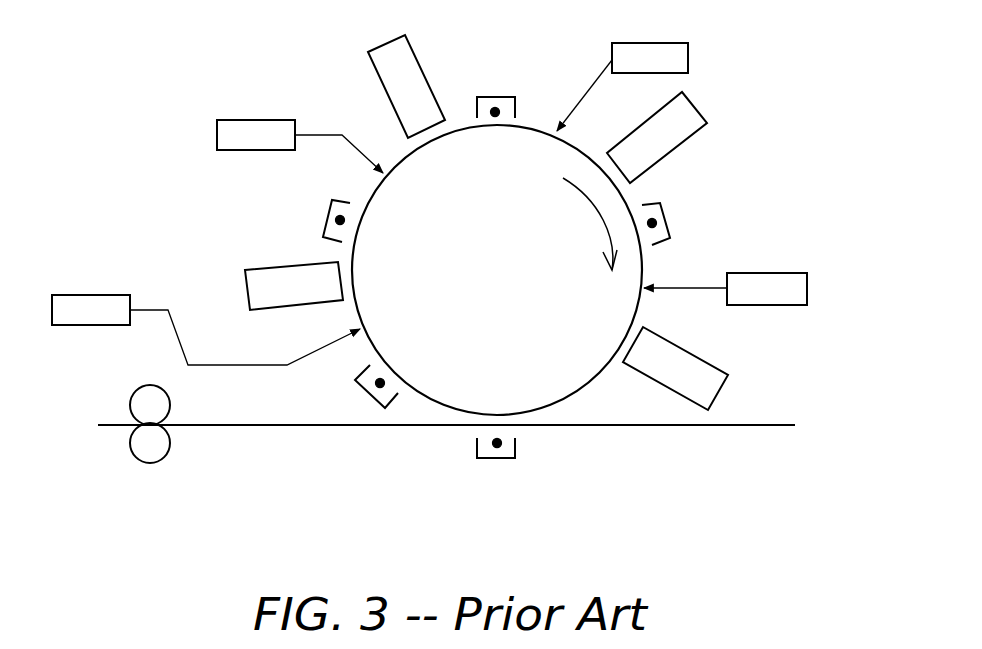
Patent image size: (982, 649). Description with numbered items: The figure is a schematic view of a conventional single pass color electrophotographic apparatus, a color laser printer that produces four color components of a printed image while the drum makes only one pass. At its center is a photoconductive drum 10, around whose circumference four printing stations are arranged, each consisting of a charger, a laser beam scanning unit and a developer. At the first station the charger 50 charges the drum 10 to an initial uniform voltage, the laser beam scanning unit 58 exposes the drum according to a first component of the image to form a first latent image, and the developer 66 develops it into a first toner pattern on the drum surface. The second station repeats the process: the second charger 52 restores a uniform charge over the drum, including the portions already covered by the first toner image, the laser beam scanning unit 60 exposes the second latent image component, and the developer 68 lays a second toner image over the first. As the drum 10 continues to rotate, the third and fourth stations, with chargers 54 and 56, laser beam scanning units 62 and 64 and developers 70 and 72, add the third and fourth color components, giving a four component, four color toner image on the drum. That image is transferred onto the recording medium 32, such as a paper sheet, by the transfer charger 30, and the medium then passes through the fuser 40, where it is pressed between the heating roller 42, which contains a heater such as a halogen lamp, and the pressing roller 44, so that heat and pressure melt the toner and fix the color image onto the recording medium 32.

The photoconductive drum 10 is at (408, 193).
The transfer charger 30 is at (505, 458).
The recording medium 32 is at (652, 423).
The fuser 40 is at (108, 457).
The heating roller 42 is at (138, 403).
The pressing roller 44 is at (140, 445).
The charger 50 is at (367, 388).
The second charger 52 is at (322, 209).
The charger 54 is at (499, 96).
The charger 56 is at (668, 222).
The laser beam scanning unit 58 is at (110, 310).
The laser beam scanning unit 60 is at (245, 133).
The laser beam scanning unit 62 is at (672, 58).
The laser beam scanning unit 64 is at (787, 288).
The developer 66 is at (275, 282).
The developer 68 is at (410, 68).
The developer 70 is at (688, 118).
The developer 72 is at (700, 377).